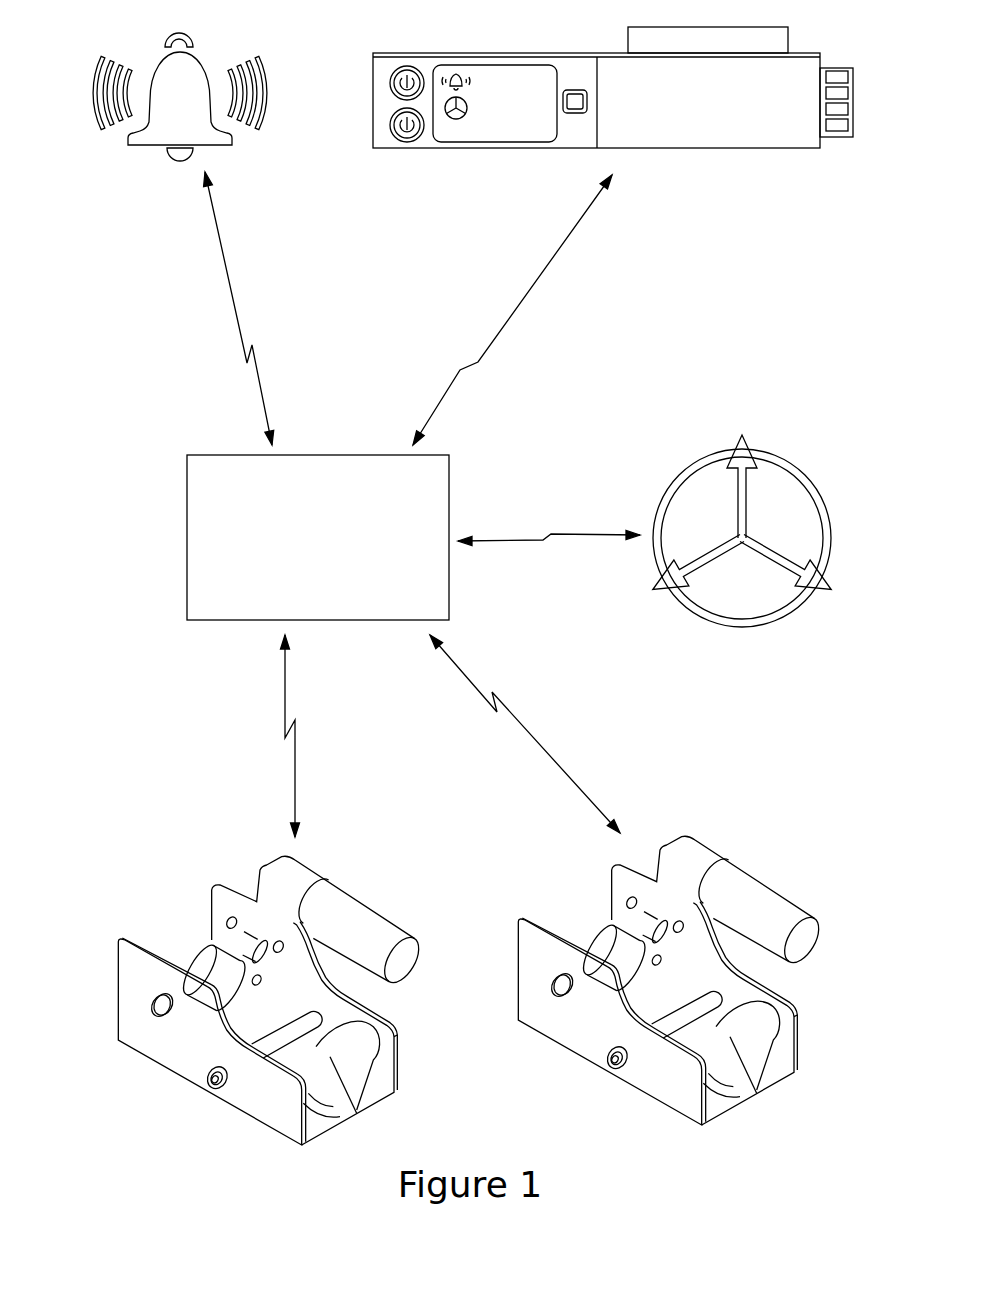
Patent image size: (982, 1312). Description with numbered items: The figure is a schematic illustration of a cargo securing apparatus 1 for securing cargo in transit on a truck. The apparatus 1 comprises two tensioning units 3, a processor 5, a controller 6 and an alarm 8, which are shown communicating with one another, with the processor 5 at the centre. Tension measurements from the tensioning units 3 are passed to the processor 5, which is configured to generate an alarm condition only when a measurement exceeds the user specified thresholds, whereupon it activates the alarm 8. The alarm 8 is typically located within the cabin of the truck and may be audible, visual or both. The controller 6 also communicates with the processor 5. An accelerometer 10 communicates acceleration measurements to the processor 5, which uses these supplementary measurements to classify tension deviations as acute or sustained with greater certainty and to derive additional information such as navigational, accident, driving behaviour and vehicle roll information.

The cargo securing apparatus 1 is at (160, 1175).
The tensioning unit 3 is at (333, 847).
The processor 5 is at (318, 537).
The controller 6 is at (743, 173).
The alarm 8 is at (143, 163).
The accelerometer 10 is at (770, 642).